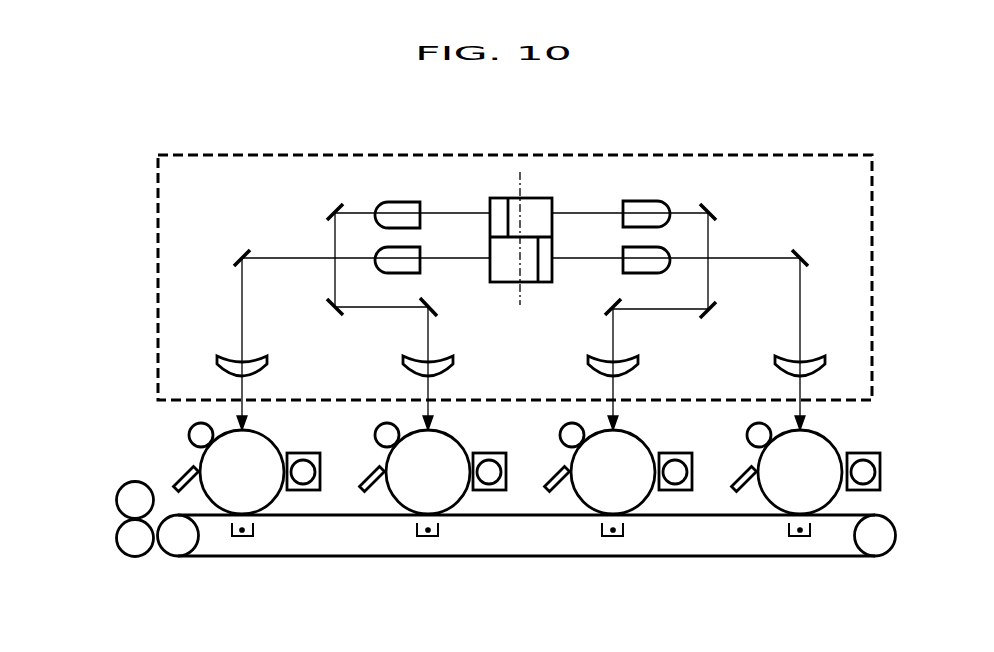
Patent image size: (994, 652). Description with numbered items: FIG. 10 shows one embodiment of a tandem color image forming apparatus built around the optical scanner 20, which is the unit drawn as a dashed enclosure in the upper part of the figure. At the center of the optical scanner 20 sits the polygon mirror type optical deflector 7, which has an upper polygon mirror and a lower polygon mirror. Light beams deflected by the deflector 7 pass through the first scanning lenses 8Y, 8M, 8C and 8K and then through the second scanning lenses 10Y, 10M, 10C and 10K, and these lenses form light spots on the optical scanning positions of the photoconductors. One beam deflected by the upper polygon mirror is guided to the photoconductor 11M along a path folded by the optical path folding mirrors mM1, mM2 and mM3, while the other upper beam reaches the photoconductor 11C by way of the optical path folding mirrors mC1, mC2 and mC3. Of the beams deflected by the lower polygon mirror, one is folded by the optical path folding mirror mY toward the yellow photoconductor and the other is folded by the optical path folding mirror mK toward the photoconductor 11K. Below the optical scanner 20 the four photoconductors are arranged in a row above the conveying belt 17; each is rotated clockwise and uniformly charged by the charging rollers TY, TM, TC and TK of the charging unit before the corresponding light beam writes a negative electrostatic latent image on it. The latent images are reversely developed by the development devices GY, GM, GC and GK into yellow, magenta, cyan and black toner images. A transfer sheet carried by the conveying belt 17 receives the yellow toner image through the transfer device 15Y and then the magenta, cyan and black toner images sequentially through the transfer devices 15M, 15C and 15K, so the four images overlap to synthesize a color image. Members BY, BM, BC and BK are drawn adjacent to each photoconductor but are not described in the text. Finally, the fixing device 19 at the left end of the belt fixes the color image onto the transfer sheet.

The polygon mirror type optical deflector 7 is at (530, 201).
The first scanning lens 8K is at (417, 267).
The first scanning lens 8C is at (416, 206).
The first scanning lens 8M is at (623, 207).
The first scanning lens 8Y is at (623, 267).
The optical path folding mirror mK is at (236, 260).
The optical path folding mirror mC1 is at (327, 218).
The optical path folding mirror mC2 is at (327, 307).
The optical path folding mirror mC3 is at (440, 305).
The optical path folding mirror mM1 is at (718, 212).
The optical path folding mirror mM2 is at (716, 308).
The optical path folding mirror mM3 is at (604, 315).
The optical path folding mirror mY is at (810, 258).
The second scanning lens 10K is at (267, 360).
The second scanning lens 10C is at (453, 359).
The second scanning lens 10M is at (639, 359).
The second scanning lens 10Y is at (819, 360).
The photoconductor 11K is at (228, 440).
The photoconductor 11C is at (414, 440).
The photoconductor 11M is at (599, 440).
The charging roller TK is at (194, 429).
The charging roller TC is at (380, 429).
The charging roller TM is at (562, 429).
The charging roller TY is at (752, 429).
The development device GK is at (303, 453).
The development device GC is at (491, 453).
The development device GM is at (675, 453).
The development device GY is at (862, 453).
The cleaning blade (black) BK is at (183, 477).
The cleaning blade (cyan) BC is at (369, 477).
The cleaning blade (magenta) BM is at (551, 477).
The cleaning blade (yellow) BY is at (741, 479).
The transfer device 15K is at (253, 525).
The transfer device 15C is at (438, 525).
The transfer device 15M is at (623, 525).
The transfer device 15Y is at (788, 526).
The conveying belt 17 is at (230, 557).
The fixing device 19 is at (129, 490).
The optical scanner 20 is at (158, 290).